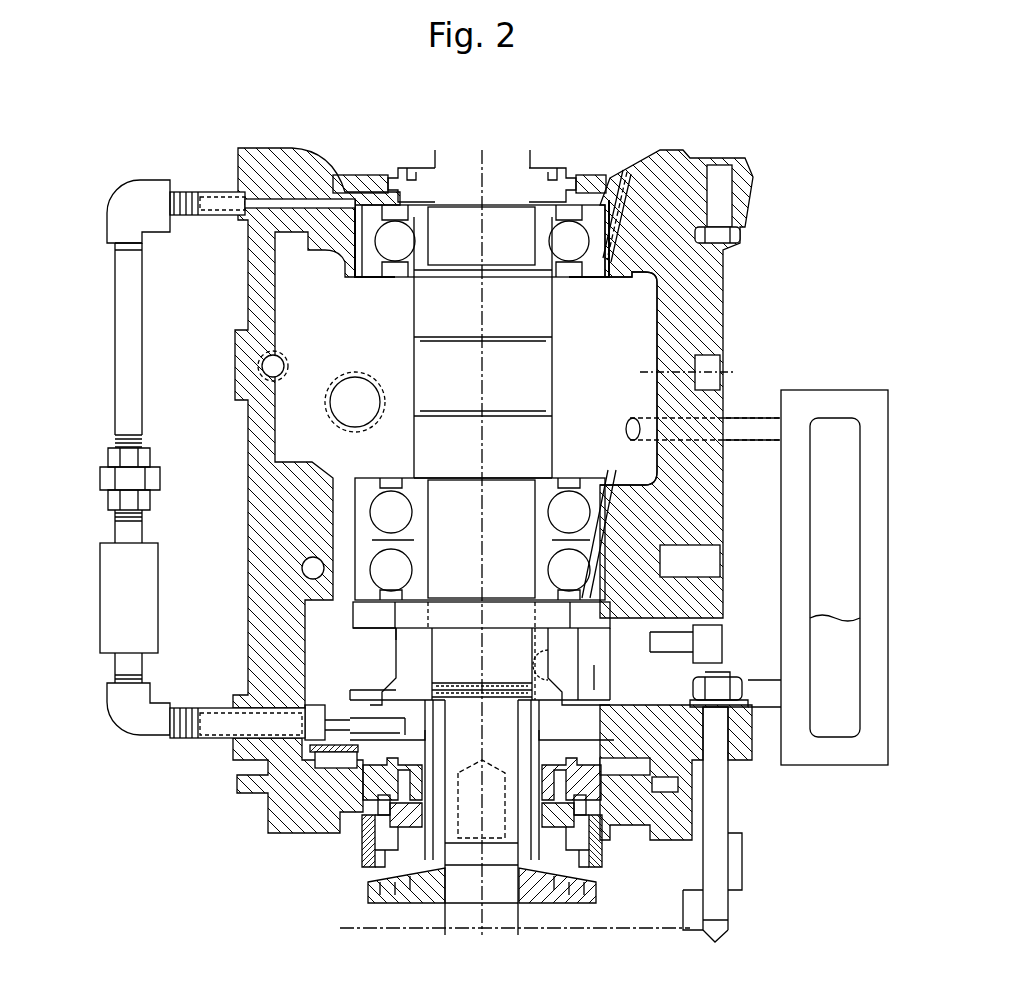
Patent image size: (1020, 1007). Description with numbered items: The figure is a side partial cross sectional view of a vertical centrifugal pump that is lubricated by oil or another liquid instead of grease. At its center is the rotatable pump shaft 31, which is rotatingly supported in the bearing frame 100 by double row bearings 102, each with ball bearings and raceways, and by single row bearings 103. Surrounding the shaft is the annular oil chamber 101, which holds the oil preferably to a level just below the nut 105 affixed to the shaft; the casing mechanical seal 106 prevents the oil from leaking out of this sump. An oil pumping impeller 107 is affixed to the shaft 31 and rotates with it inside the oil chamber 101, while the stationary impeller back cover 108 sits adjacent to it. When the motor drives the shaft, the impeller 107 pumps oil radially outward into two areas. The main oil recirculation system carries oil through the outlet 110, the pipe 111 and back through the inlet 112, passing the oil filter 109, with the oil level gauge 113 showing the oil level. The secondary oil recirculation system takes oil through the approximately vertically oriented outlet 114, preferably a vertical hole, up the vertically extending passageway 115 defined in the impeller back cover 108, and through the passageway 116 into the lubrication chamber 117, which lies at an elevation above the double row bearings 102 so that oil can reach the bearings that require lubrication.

The pump shaft 31 is at (438, 300).
The bearing frame 100 is at (262, 277).
The oil chamber 101 is at (382, 643).
The double row bearings 102 is at (598, 487).
The single row bearings 103 is at (548, 212).
The nut 105 is at (395, 607).
The casing mechanical seal 106 is at (445, 722).
The oil pumping impeller 107 is at (396, 637).
The impeller back cover 108 is at (345, 695).
The oil filter 109 is at (114, 595).
The outlet 110 is at (212, 740).
The pipe 111 is at (112, 347).
The inlet 112 is at (208, 192).
The oil level gauge 113 is at (862, 405).
The outlet 114 is at (660, 715).
The passageway 115 is at (610, 648).
The passageway 116 is at (655, 508).
The lubrication chamber 117 is at (628, 326).